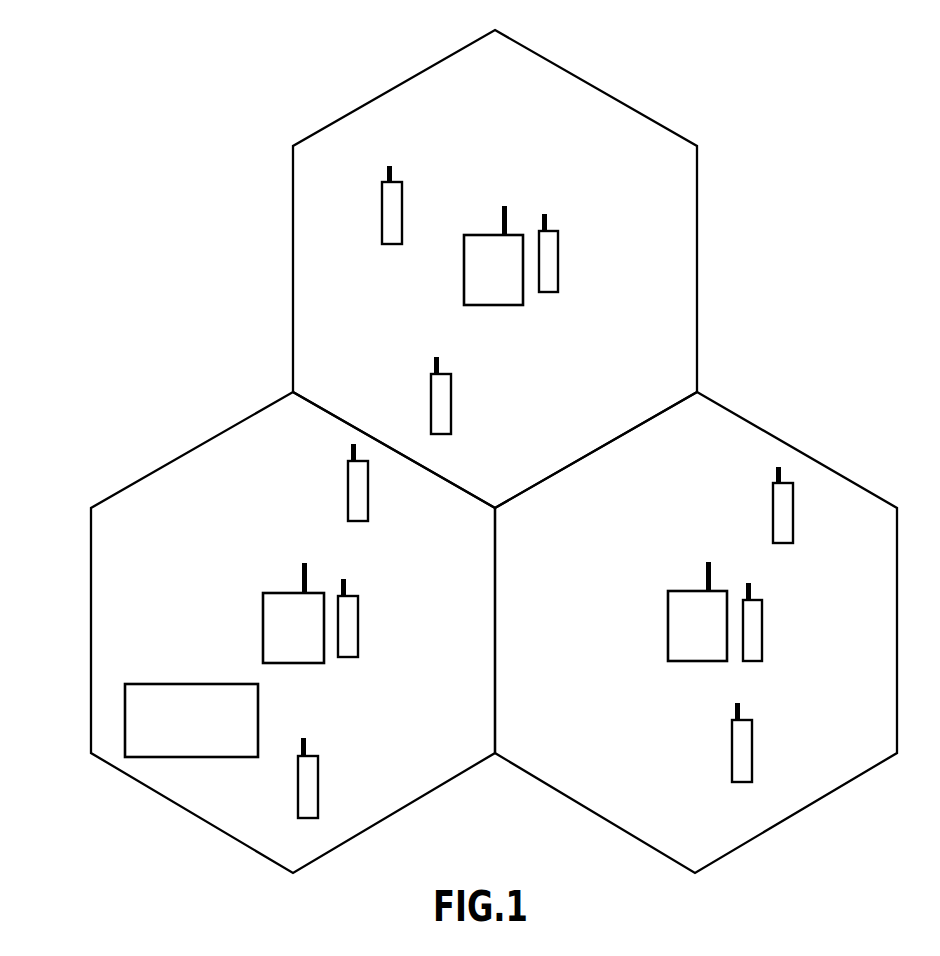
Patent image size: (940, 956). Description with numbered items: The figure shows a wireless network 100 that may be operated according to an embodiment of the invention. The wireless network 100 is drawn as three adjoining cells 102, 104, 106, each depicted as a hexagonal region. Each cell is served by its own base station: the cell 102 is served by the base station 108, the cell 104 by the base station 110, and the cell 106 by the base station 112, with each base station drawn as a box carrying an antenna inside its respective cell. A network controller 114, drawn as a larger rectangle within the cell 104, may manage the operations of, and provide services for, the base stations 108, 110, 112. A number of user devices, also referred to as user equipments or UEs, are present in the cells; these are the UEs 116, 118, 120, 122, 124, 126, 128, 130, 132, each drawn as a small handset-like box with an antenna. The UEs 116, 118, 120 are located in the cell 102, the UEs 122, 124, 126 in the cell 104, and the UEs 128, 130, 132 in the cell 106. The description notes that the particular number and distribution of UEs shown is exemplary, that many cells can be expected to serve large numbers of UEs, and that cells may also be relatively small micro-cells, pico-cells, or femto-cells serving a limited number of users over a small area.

The wireless network 100 is at (788, 62).
The cell 102 is at (293, 268).
The cell 104 is at (91, 625).
The cell 106 is at (795, 450).
The base station 108 is at (464, 266).
The base station 110 is at (263, 625).
The base station 112 is at (668, 624).
The network controller 114 is at (158, 684).
The user equipment 116 is at (402, 212).
The user equipment 118 is at (558, 263).
The user equipment 120 is at (451, 403).
The user equipment 122 is at (348, 490).
The user equipment 124 is at (358, 625).
The user equipment 126 is at (298, 786).
The user equipment 128 is at (773, 511).
The user equipment 130 is at (762, 628).
The user equipment 132 is at (752, 749).